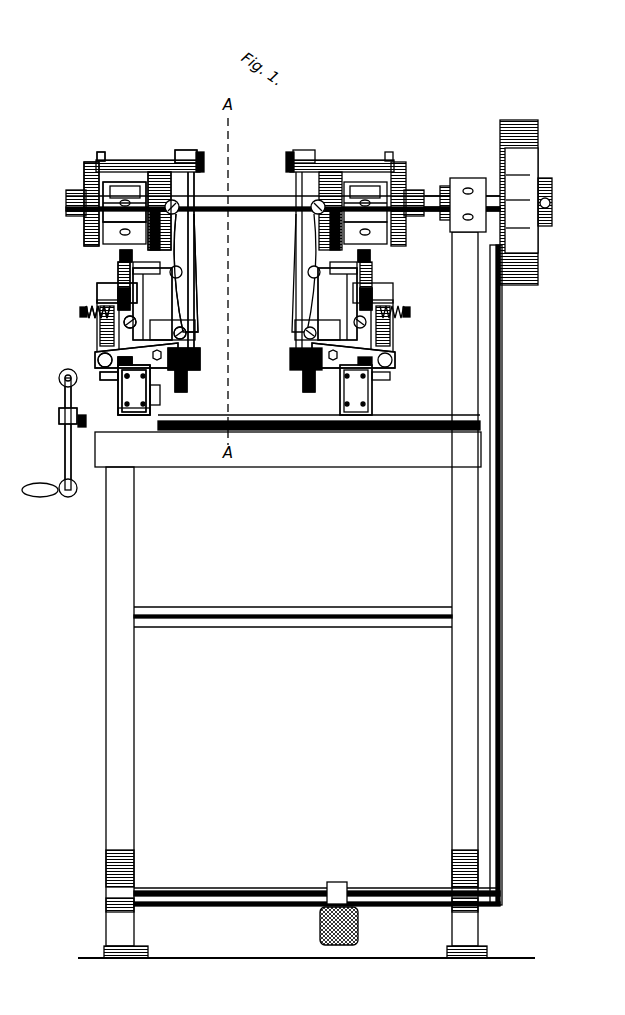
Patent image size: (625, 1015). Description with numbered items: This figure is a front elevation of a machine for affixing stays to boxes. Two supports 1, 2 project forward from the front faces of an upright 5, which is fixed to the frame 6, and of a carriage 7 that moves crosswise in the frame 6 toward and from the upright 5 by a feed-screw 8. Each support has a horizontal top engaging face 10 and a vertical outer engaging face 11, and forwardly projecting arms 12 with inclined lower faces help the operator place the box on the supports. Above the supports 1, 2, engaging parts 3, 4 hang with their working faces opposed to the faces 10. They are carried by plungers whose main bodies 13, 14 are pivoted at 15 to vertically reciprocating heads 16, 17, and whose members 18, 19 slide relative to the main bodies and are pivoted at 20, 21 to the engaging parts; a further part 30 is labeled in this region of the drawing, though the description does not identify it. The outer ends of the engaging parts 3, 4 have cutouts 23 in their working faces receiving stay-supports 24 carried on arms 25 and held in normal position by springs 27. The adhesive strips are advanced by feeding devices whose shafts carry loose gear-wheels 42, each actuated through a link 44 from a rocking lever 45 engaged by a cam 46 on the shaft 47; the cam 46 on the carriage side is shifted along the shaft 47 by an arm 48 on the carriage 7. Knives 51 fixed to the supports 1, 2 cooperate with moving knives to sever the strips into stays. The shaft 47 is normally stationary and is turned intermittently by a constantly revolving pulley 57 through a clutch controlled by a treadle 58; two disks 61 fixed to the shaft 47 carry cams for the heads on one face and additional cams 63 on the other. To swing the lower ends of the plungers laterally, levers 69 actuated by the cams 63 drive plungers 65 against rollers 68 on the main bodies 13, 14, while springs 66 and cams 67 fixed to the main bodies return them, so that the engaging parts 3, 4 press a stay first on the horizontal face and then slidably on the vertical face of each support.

The support 1 is at (128, 398).
The support 2 is at (362, 398).
The engaging part 3 is at (118, 370).
The engaging part 4 is at (372, 370).
The upright 5 is at (152, 390).
The frame 6 is at (120, 542).
The carriage 7 is at (340, 390).
The feed-screw 8 is at (240, 424).
The engaging face 10 is at (122, 403).
The engaging face 11 is at (125, 388).
The arm 12 is at (137, 398).
The main body 13 is at (120, 300).
The main body 14 is at (370, 300).
The pivot 15 is at (118, 288).
The head 16 is at (150, 277).
The head 17 is at (340, 282).
The member 18 is at (124, 262).
The member 19 is at (366, 262).
The pivot 20 is at (178, 372).
The pivot 21 is at (308, 380).
The cutout 23 is at (118, 374).
The stay-support 24 is at (116, 392).
The arm 25 is at (118, 382).
The spring 27 is at (118, 359).
The rod 30 is at (122, 283).
The gear-wheel 42 is at (188, 352).
The link 44 is at (195, 262).
The rocking lever 45 is at (175, 152).
The cam 46 is at (88, 172).
The shaft 47 is at (238, 202).
The arm 48 is at (420, 200).
The knife 51 is at (136, 410).
The pulley 57 is at (518, 178).
The treadle 58 is at (320, 928).
The disk 61 is at (158, 197).
The cam 63 is at (165, 232).
The plunger 65 is at (172, 335).
The spring 66 is at (110, 324).
The cam 67 is at (104, 353).
The roller 68 is at (132, 322).
The lever 69 is at (190, 248).